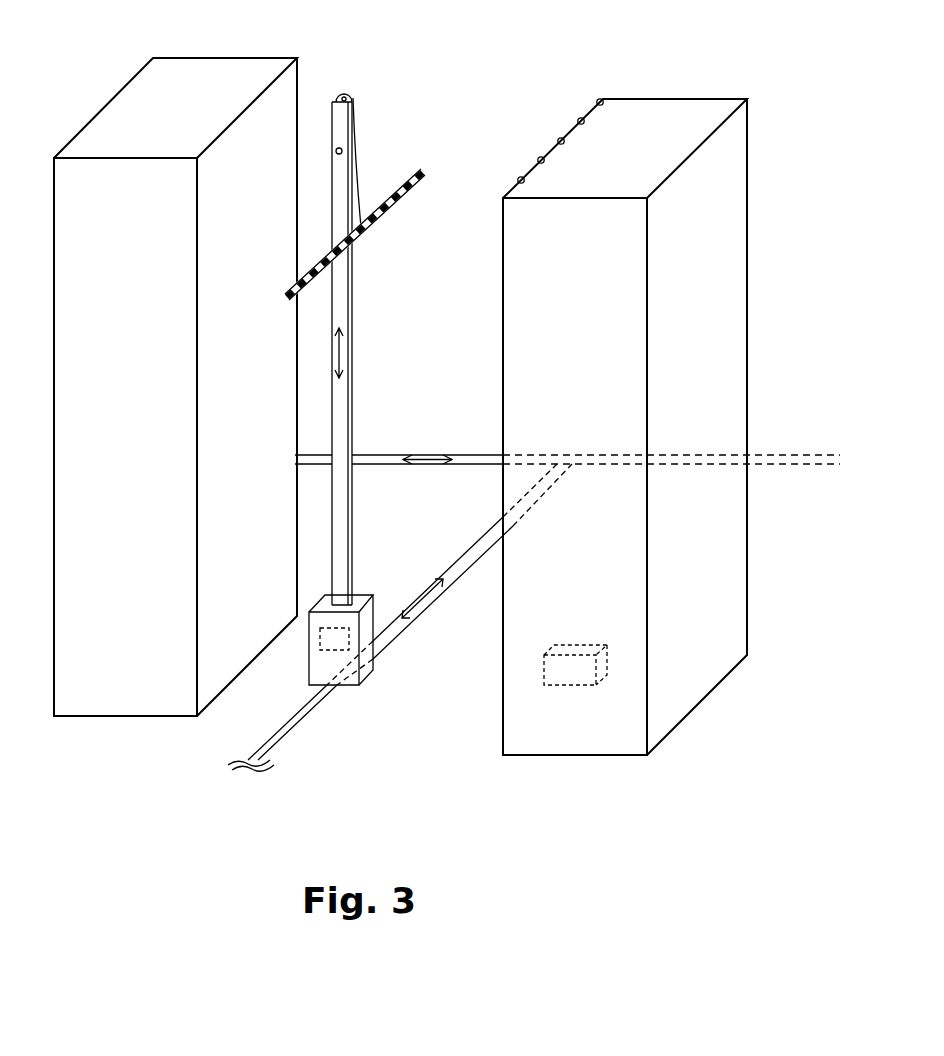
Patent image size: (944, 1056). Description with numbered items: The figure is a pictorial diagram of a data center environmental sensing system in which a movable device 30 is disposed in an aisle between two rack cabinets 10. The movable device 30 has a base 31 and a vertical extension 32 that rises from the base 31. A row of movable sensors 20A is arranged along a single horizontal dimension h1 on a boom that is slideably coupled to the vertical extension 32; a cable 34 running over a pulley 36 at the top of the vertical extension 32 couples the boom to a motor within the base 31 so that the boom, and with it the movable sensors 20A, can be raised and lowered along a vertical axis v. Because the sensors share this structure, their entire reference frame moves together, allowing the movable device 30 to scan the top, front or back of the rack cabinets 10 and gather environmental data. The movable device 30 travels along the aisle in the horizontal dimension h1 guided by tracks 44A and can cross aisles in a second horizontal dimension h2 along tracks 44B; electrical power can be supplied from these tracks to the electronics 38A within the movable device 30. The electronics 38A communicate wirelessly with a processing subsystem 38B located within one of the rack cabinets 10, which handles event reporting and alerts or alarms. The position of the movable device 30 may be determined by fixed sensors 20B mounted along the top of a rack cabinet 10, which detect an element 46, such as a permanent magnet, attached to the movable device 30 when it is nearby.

The rack cabinet 10 is at (252, 73).
The movable sensors 20A is at (423, 172).
The fixed sensors 20B is at (603, 99).
The movable device 30 is at (395, 378).
The base 31 is at (363, 595).
The vertical extension 32 is at (352, 530).
The cable 34 is at (357, 157).
The pulley 36 is at (347, 94).
The electronics 38A is at (320, 637).
The processing subsystem 38B is at (572, 643).
The tracks 44A is at (292, 728).
The tracks 44B is at (372, 455).
The element 46 is at (335, 153).
The horizontal dimension h1 is at (423, 602).
The horizontal dimension h2 is at (425, 463).
The vertical axis v is at (339, 363).